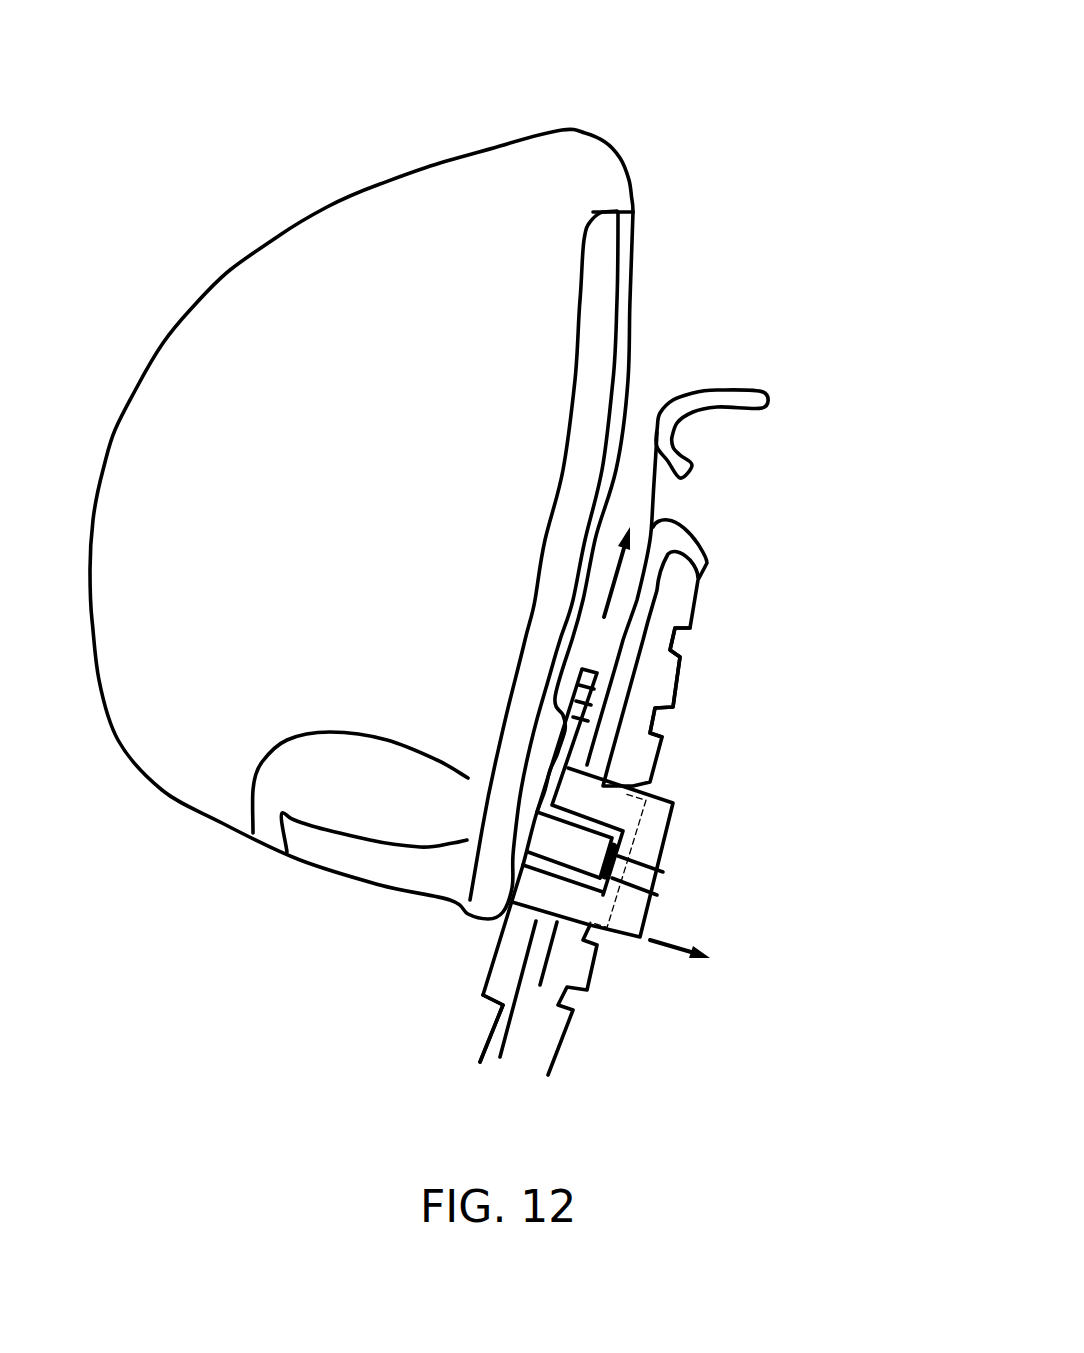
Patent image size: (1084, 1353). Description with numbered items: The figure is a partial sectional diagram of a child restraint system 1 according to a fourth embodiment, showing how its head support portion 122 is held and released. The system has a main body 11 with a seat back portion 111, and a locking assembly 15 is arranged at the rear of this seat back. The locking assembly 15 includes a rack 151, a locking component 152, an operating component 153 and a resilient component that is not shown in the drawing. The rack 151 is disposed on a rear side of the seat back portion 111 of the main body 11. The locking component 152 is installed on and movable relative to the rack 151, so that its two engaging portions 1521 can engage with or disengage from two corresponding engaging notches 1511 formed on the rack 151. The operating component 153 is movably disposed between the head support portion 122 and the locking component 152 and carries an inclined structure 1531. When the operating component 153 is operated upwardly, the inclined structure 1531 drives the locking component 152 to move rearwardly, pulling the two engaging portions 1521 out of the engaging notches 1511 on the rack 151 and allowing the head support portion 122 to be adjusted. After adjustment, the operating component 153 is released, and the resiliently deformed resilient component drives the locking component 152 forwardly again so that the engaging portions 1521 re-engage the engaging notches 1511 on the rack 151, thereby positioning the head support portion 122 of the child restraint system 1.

The child restraint system 1 is at (736, 76).
The main body 11 is at (614, 604).
The seat back portion 111 is at (718, 432).
The head support portion 122 is at (180, 393).
The locking assembly 15 is at (866, 494).
The rack 151 is at (740, 644).
The engaging notches 1511 is at (697, 651).
The locking component 152 is at (595, 797).
The engaging portions 1521 is at (645, 875).
The operating component 153 is at (680, 970).
The inclined structure 1531 is at (508, 987).